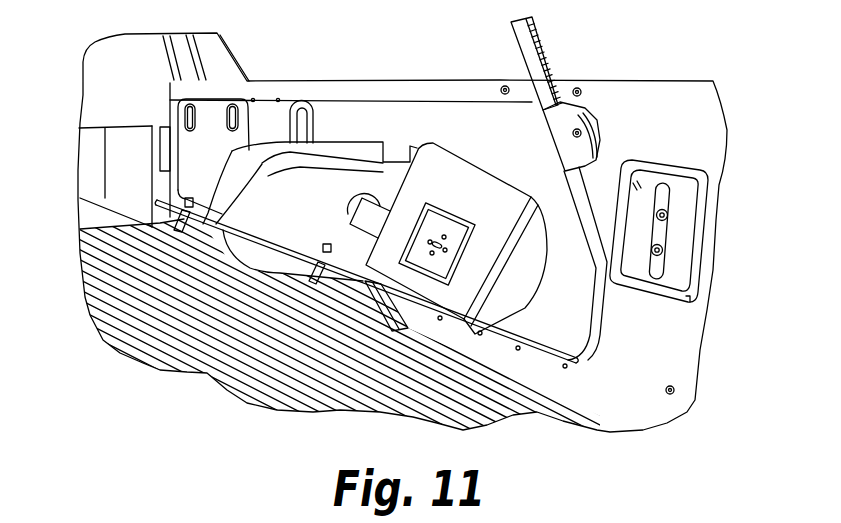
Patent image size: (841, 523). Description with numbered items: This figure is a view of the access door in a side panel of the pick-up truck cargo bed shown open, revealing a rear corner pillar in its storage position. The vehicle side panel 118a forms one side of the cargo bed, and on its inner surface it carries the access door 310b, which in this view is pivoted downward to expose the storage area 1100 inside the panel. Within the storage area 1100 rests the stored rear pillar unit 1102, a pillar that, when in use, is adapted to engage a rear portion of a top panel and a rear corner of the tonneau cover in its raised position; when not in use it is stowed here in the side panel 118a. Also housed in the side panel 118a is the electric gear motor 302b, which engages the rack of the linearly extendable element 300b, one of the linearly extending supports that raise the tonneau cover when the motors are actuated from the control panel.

The vehicle side panel 118a is at (285, 82).
The rear pillar unit 1102 is at (338, 192).
The linearly extendable element 300b is at (549, 41).
The electric gear motor 302b is at (600, 125).
The access door 310b is at (292, 252).
The storage area 1100 is at (564, 305).